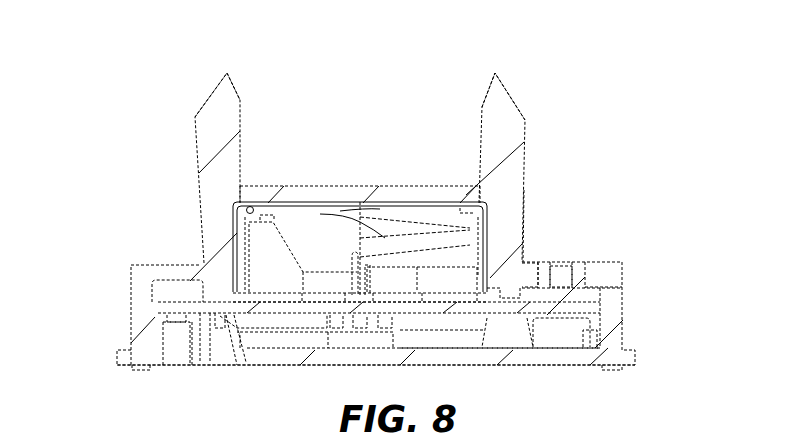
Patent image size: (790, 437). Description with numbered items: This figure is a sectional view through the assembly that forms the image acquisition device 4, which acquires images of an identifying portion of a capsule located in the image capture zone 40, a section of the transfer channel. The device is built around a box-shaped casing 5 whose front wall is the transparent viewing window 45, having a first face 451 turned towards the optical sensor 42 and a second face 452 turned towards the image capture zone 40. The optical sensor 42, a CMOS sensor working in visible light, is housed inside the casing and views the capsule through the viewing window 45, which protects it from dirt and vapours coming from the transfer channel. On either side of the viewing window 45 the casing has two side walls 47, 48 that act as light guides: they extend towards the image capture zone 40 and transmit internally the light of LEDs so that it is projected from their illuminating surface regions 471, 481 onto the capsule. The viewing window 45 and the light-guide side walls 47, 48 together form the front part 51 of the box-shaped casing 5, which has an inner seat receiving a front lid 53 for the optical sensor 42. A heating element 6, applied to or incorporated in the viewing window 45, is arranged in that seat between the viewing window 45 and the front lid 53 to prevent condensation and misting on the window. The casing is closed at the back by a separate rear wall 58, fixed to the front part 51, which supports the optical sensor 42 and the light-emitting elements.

The image acquisition device 4 is at (106, 145).
The image capture zone 40 is at (384, 89).
The side wall 48 is at (190, 128).
The illuminating surface region 481 is at (241, 98).
The side wall 47 is at (525, 99).
The illuminating surface region 471 is at (486, 90).
The viewing window 45 is at (428, 179).
The first face 451 is at (413, 200).
The second face 452 is at (302, 186).
The front lid 53 is at (467, 240).
The front part 51 is at (530, 234).
The heating element 6 is at (342, 212).
The optical sensor 42 is at (335, 297).
The box-shaped casing 5 is at (629, 301).
The rear wall 58 is at (262, 362).